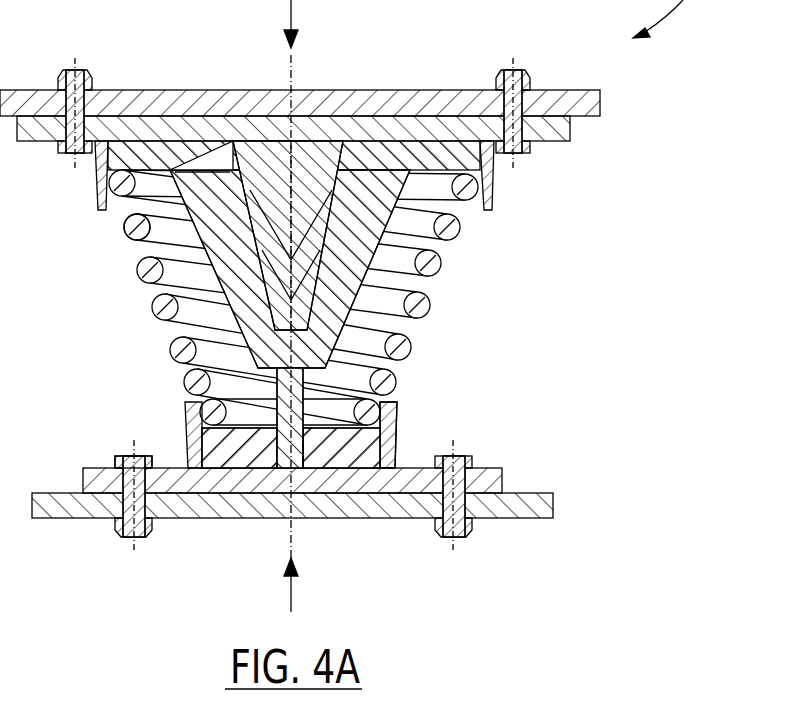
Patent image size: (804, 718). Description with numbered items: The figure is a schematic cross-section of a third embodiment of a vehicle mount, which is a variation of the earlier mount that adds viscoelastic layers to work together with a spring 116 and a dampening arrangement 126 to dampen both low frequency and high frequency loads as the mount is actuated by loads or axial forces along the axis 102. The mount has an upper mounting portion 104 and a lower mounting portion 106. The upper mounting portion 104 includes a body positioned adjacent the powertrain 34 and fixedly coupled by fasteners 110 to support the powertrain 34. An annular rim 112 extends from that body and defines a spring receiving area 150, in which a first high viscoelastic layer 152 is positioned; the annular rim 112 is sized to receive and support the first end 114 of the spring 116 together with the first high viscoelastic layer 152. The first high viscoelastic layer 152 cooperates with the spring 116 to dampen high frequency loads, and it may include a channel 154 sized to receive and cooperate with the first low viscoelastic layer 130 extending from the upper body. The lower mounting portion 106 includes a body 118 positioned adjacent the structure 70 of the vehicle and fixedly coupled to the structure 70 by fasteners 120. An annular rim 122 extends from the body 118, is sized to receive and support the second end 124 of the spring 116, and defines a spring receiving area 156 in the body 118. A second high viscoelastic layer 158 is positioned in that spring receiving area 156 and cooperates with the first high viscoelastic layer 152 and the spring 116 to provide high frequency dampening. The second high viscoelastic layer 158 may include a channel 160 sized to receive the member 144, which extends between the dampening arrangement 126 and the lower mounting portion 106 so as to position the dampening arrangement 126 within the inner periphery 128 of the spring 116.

The powertrain 34 is at (603, 103).
The structure 70 is at (555, 506).
The axis 102 is at (288, 24).
The upper mounting portion 104 is at (572, 127).
The lower mounting portion 106 is at (500, 481).
The fasteners 110 is at (67, 76).
The annular rim 112 is at (494, 180).
The first end 114 is at (462, 168).
The spring 116 is at (434, 265).
The body 118 is at (115, 464).
The fasteners 120 is at (133, 538).
The annular rim 122 is at (397, 440).
The second end 124 is at (397, 402).
The dampening arrangement 126 is at (264, 277).
The inner periphery 128 is at (185, 225).
The first low viscoelastic layer 130 is at (252, 152).
The member 144 is at (285, 455).
The spring receiving area 150 is at (365, 155).
The first high viscoelastic layer 152 is at (203, 152).
The channel 154 is at (335, 157).
The spring receiving area 156 is at (357, 450).
The second high viscoelastic layer 158 is at (228, 453).
The channel 160 is at (330, 448).